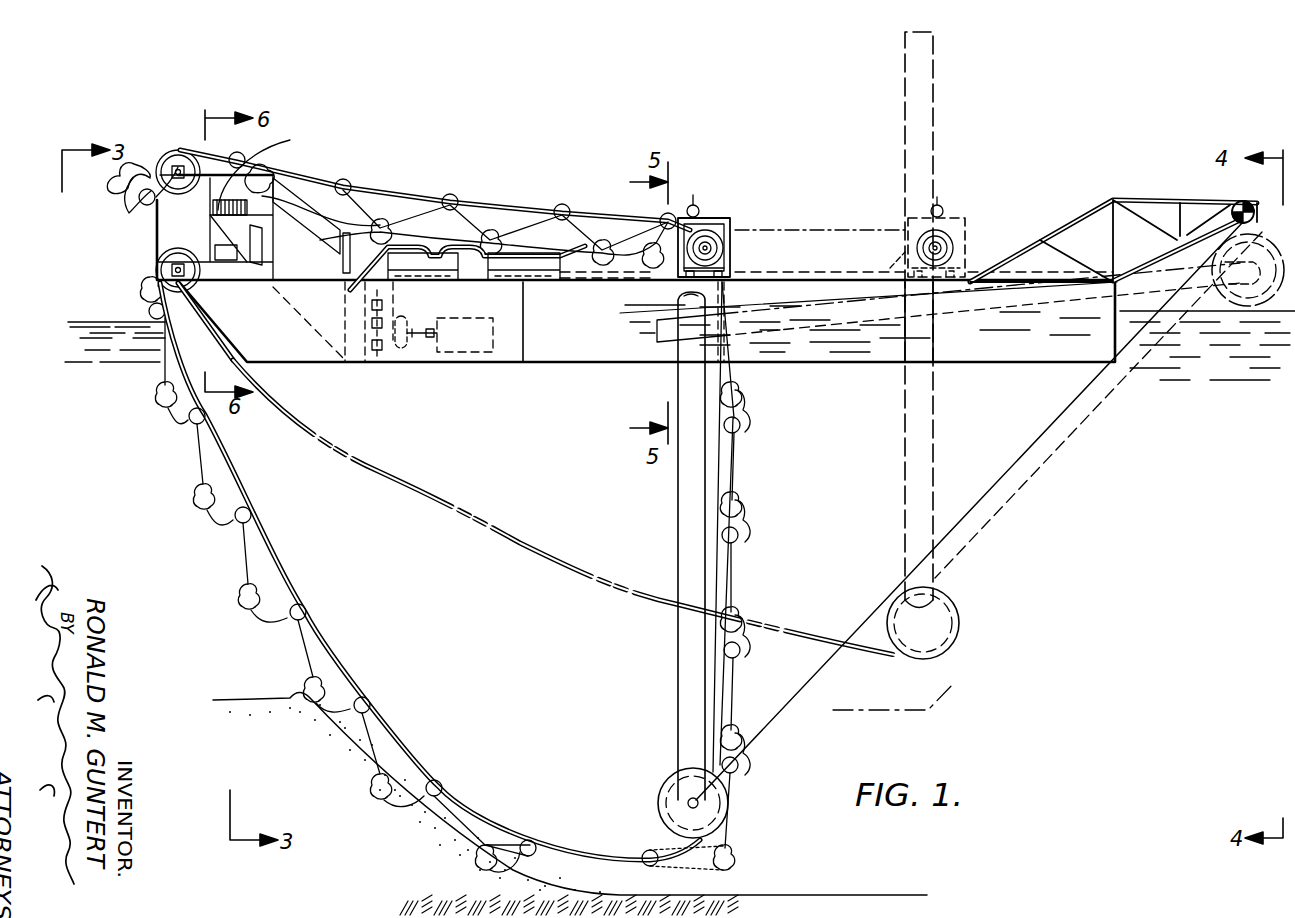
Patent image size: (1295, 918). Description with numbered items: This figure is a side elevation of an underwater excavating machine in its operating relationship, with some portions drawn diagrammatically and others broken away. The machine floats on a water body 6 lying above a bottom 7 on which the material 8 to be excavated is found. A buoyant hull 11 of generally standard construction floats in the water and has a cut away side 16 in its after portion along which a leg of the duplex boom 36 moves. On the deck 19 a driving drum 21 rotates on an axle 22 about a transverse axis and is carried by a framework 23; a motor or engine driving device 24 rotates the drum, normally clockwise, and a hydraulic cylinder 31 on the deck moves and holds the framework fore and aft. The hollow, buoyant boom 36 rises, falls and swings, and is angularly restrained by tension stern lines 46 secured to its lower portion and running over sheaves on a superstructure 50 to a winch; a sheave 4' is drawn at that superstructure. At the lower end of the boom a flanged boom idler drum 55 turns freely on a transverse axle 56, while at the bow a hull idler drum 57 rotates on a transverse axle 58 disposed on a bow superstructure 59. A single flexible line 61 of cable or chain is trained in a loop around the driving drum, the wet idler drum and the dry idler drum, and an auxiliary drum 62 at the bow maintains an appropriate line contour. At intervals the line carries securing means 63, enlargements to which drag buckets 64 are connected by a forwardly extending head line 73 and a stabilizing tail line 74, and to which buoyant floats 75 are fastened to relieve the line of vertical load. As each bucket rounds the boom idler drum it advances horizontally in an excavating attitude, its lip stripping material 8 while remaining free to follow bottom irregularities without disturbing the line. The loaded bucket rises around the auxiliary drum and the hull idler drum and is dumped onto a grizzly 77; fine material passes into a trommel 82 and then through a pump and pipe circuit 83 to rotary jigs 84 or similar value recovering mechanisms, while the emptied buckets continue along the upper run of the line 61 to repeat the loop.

The sheave 4' is at (1263, 220).
The water body 6 is at (76, 322).
The bottom 7 is at (765, 895).
The material 8 is at (278, 792).
The hull 11 is at (555, 363).
The cut away side 16 is at (655, 251).
The deck 19 is at (586, 281).
The driving drum 21 is at (721, 246).
The axle 22 is at (712, 228).
The framework 23 is at (662, 216).
The driving device 24 is at (690, 206).
The hydraulic cylinder 31 is at (464, 280).
The duplex boom 36 is at (677, 761).
The tension stern lines 46 is at (1050, 424).
The superstructure 50 is at (1124, 201).
The boom idler drum 55 is at (660, 805).
The transverse axle 56 is at (698, 802).
The hull idler drum 57 is at (190, 157).
The transverse axle 58 is at (149, 181).
The superstructure 59 is at (240, 160).
The line 61 is at (458, 202).
The auxiliary drum 62 is at (176, 265).
The securing means 63 is at (448, 202).
The drag bucket 64 is at (604, 236).
The head line 73 is at (606, 252).
The tail line 74 is at (570, 253).
The float 75 is at (562, 206).
The grizzly 77 is at (262, 168).
The trommel 82 is at (283, 170).
The pump and pipe circuit 83 is at (359, 185).
The rotary jig 84 is at (474, 266).